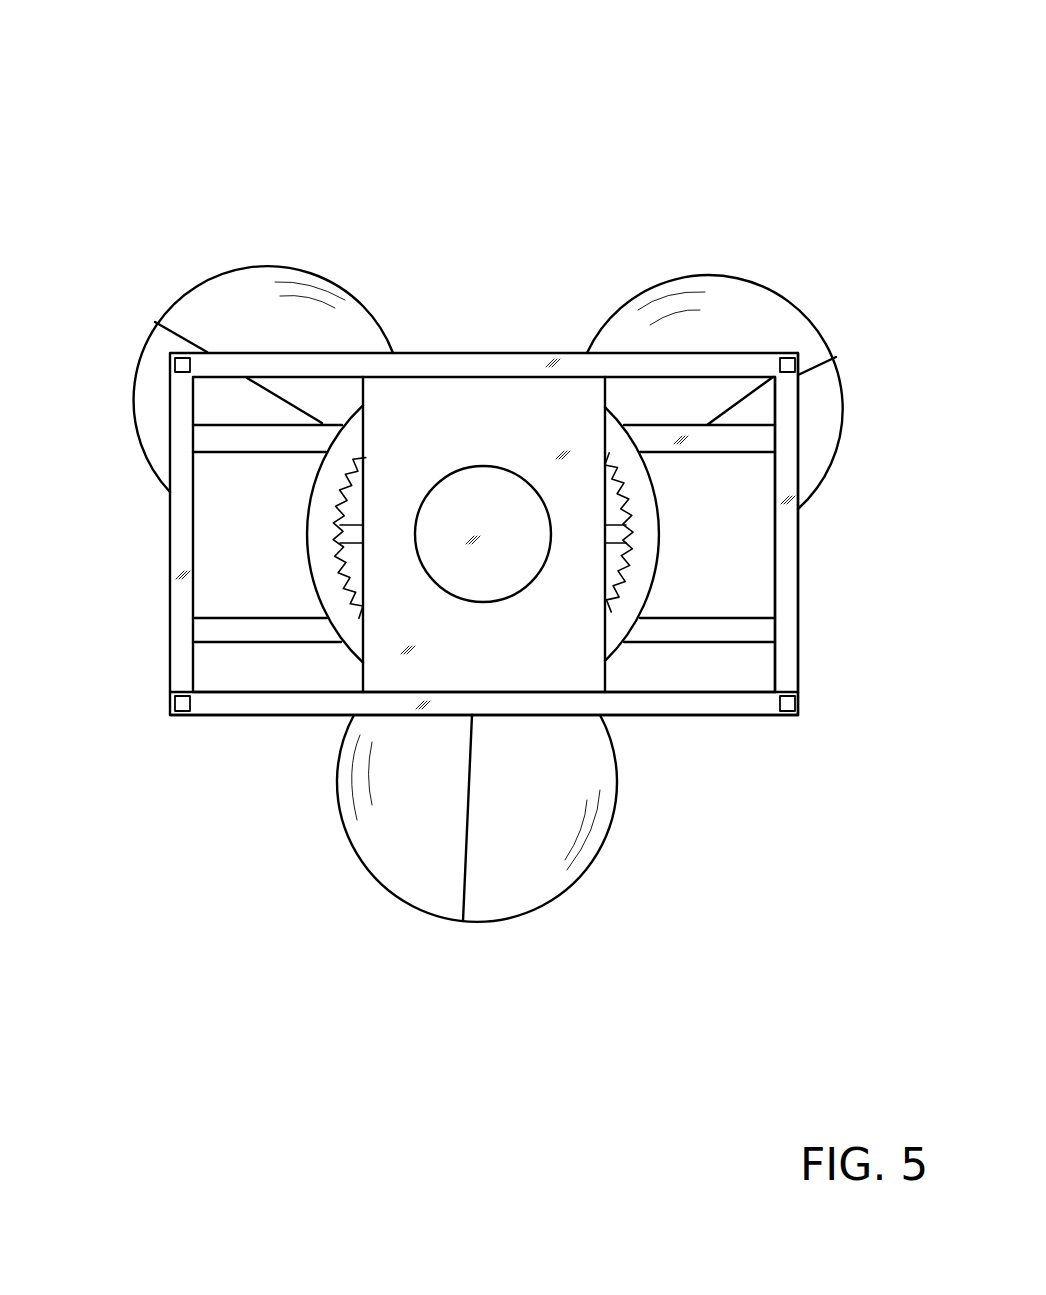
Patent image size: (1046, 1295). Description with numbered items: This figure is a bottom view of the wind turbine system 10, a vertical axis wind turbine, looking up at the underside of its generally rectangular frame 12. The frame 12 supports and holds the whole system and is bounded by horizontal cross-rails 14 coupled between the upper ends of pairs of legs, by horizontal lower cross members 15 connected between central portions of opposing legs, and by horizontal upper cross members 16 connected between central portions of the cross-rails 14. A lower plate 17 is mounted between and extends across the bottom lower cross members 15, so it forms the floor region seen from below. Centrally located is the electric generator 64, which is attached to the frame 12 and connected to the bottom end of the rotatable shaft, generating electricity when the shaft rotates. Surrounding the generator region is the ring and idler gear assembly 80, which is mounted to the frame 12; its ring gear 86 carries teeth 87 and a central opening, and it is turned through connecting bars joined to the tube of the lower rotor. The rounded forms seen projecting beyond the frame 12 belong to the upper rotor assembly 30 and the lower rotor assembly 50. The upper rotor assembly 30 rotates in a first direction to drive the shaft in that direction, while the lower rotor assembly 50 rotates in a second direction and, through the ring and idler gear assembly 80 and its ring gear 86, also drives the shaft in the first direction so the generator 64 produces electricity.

The wind turbine system 10 is at (185, 140).
The frame 12 is at (156, 577).
The horizontal cross-rail 14 is at (790, 555).
The horizontal lower cross member 15 is at (725, 716).
The horizontal upper cross member 16 is at (725, 618).
The lower plate 17 is at (418, 663).
The upper rotor assembly 30 is at (225, 262).
The lower rotor assembly 50 is at (117, 389).
The electric generator 64 is at (493, 466).
The ring and idler gear assembly 80 is at (677, 501).
The ring gear 86 is at (310, 563).
The teeth 87 is at (345, 503).